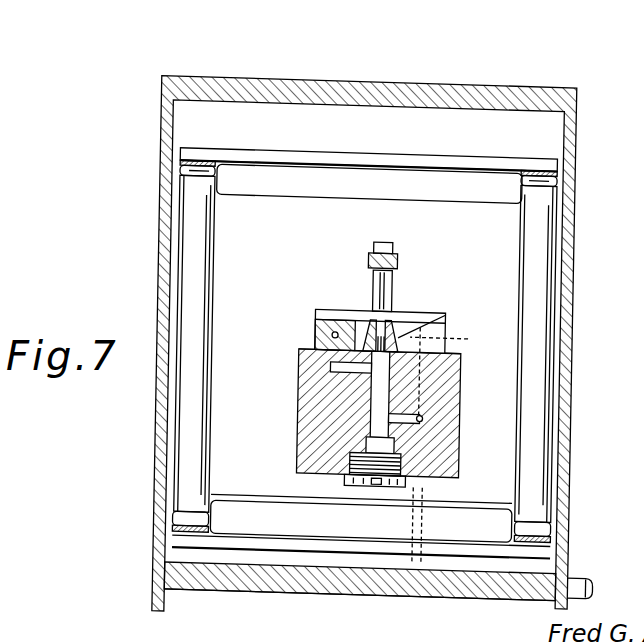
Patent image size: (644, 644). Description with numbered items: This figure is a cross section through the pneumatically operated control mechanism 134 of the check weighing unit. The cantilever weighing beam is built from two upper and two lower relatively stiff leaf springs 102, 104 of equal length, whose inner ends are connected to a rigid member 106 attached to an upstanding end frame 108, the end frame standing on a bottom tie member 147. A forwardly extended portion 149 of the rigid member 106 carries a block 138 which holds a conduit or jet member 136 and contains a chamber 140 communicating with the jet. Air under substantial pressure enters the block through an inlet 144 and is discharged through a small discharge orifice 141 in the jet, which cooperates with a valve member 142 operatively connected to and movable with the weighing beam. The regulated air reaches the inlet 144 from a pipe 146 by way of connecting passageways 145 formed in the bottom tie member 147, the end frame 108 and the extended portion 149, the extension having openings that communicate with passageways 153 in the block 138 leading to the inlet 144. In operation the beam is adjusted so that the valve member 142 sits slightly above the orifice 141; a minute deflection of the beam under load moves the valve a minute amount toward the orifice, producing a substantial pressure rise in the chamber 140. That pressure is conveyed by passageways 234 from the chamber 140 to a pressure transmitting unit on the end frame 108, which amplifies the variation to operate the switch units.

The upper cantilever springs 102 is at (214, 174).
The lower cantilever springs 104 is at (196, 527).
The rigid member 106 is at (553, 393).
The end frame 108 is at (451, 556).
The pneumatically operated control mechanism 134 is at (288, 336).
The jet member 136 is at (445, 316).
The block 138 is at (300, 443).
The chamber 140 is at (372, 330).
The discharge orifice 141 is at (402, 338).
The valve member 142 is at (371, 278).
The inlet 144 is at (447, 430).
The connecting passageways 145 is at (416, 520).
The pipe 146 is at (583, 571).
The bottom tie member 147 is at (349, 597).
The extended portion 149 is at (452, 351).
The passageways 153 is at (462, 398).
The passageways 234 is at (345, 374).